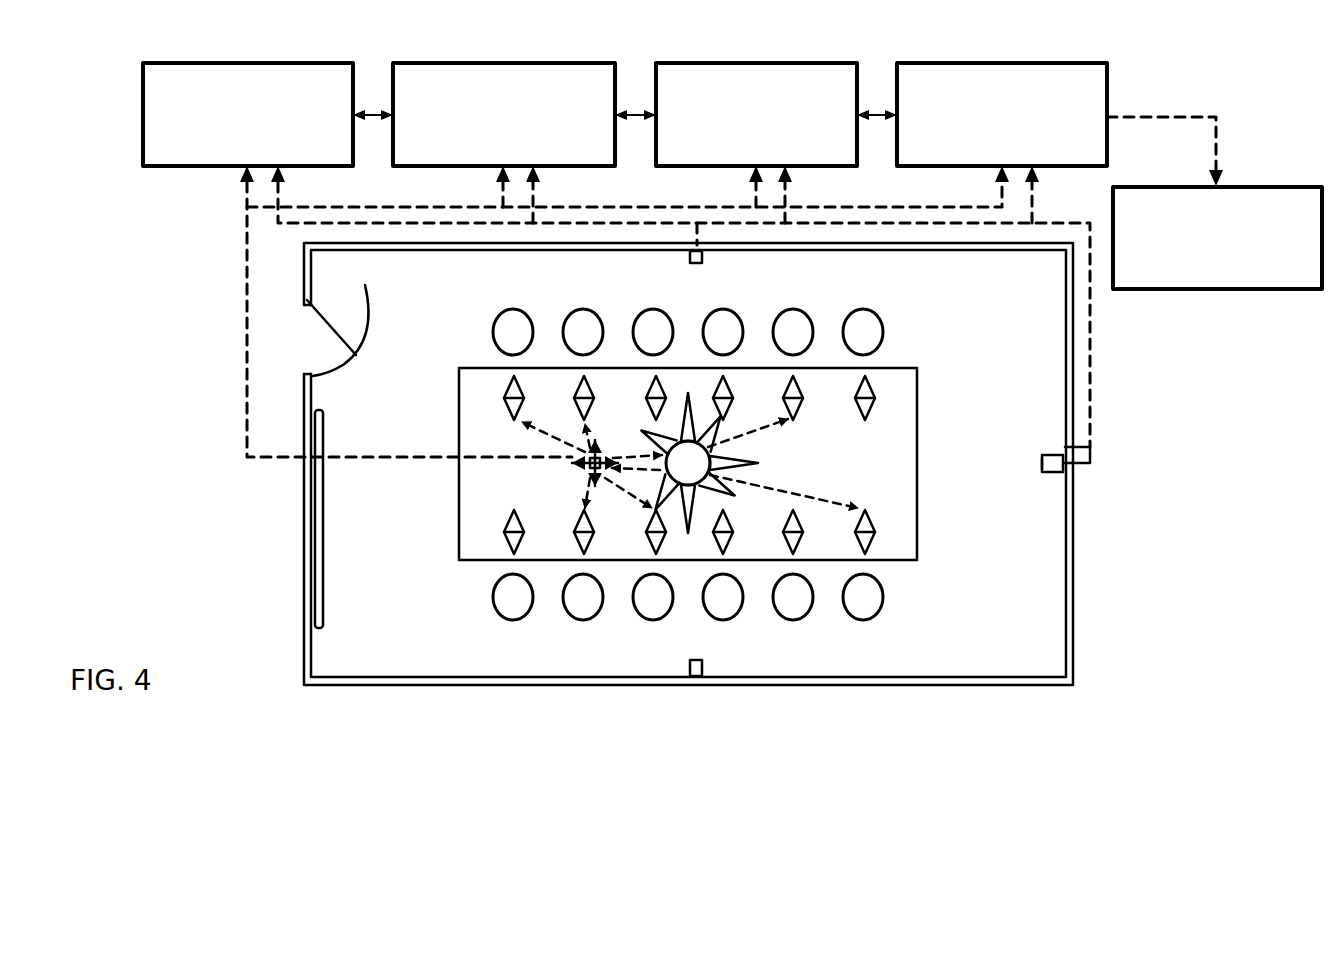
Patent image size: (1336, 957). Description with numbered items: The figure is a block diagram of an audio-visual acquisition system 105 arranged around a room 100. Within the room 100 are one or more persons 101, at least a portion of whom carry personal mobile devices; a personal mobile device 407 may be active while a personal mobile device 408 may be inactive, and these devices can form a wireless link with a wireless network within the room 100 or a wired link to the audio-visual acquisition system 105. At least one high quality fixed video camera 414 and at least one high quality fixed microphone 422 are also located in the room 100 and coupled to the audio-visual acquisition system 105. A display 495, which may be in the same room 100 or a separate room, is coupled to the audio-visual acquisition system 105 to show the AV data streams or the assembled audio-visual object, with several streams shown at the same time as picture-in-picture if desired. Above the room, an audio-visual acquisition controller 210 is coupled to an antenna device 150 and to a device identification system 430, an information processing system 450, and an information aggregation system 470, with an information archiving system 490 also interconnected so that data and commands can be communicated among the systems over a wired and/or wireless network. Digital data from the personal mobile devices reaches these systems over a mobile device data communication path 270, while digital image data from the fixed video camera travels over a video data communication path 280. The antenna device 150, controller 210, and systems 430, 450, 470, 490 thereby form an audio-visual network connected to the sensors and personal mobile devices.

The room 100 is at (1124, 676).
The persons 101 is at (510, 333).
The audio-visual acquisition system 105 is at (1152, 70).
The antenna device 150 is at (578, 468).
The audio-visual acquisition controller 210 is at (180, 160).
The mobile device data communication path 270 is at (246, 338).
The video data communication path 280 is at (1090, 368).
The personal mobile device 407 is at (870, 540).
The personal mobile device 408 is at (875, 410).
The fixed video camera 414 is at (1065, 478).
The fixed microphone 422 is at (690, 463).
The device identification system 430 is at (581, 92).
The information processing system 450 is at (848, 83).
The information aggregation system 470 is at (1095, 83).
The information archiving system 490 is at (1283, 258).
The display 495 is at (318, 505).